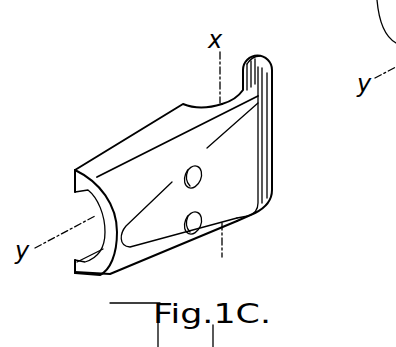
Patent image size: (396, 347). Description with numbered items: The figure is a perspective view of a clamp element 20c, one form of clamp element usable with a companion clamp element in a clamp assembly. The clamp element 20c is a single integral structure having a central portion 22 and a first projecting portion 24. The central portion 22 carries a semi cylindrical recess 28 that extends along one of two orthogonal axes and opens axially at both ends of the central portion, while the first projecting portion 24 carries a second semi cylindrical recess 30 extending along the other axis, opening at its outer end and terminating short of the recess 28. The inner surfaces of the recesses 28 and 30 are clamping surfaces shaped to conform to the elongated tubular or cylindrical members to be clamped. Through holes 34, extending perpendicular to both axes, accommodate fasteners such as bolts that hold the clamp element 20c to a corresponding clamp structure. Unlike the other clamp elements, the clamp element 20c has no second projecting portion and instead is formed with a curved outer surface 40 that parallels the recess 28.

The clamp element 20c is at (138, 110).
The central portion 22 is at (192, 106).
The first projecting portion 24 is at (112, 146).
The semi cylindrical recess 28 is at (233, 82).
The semi cylindrical recess 30 is at (75, 193).
The through holes 34 is at (202, 185).
The curved outer surface 40 is at (262, 162).